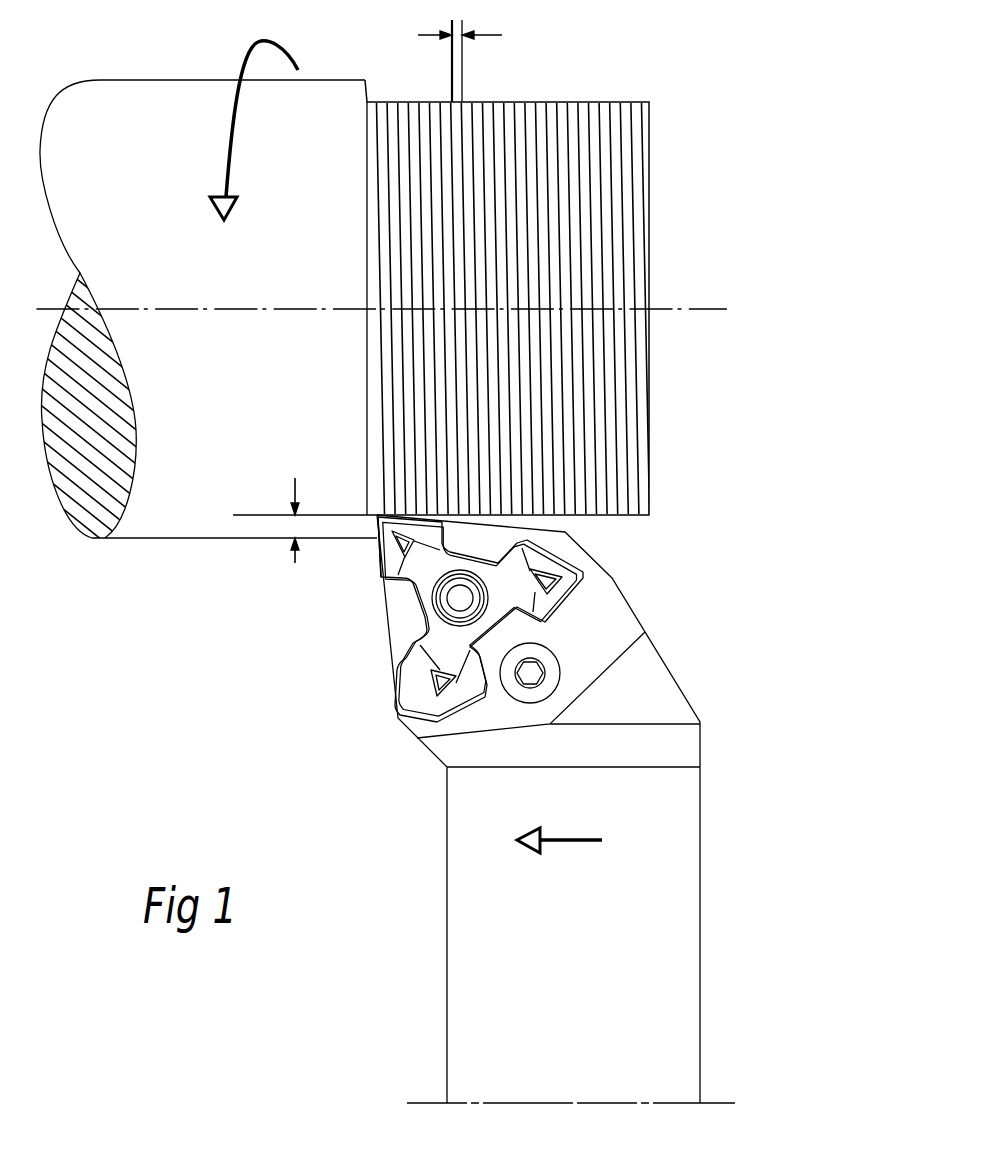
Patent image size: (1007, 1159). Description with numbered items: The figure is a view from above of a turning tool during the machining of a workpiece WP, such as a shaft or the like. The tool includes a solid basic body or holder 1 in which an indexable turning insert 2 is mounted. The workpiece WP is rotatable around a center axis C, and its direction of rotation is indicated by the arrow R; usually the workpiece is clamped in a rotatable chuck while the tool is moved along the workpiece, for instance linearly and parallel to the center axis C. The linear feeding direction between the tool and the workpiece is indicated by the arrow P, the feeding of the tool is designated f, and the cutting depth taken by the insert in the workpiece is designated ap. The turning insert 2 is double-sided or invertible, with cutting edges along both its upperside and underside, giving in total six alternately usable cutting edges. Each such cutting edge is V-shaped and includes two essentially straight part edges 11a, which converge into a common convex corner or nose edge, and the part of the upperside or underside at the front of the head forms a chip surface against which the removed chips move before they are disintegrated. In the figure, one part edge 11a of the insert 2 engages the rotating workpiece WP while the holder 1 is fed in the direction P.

The workpiece WP is at (153, 95).
The arrow indicating direction of rotation R is at (254, 116).
The feeding of the tool f is at (460, 55).
The center axis C is at (713, 310).
The cutting depth ap is at (311, 518).
The holder 1 is at (688, 667).
The indexable turning insert 2 is at (400, 618).
The part edge 11a is at (380, 551).
The arrow indicating feeding direction P is at (559, 826).